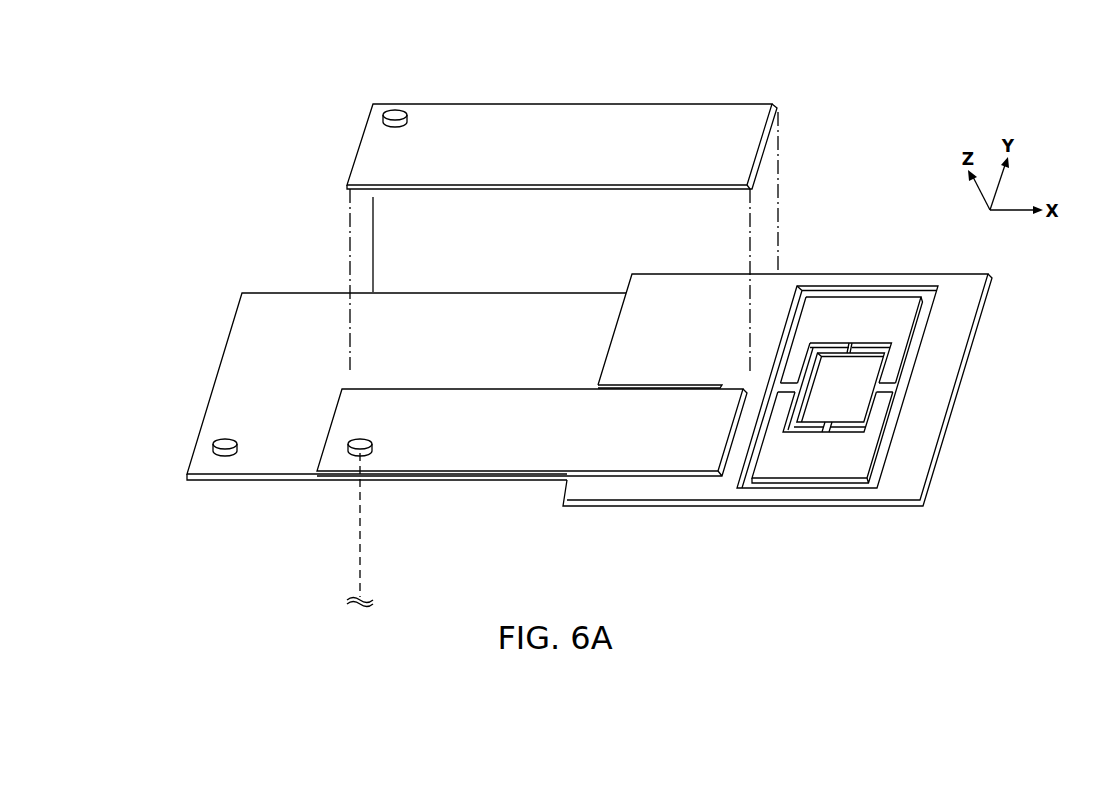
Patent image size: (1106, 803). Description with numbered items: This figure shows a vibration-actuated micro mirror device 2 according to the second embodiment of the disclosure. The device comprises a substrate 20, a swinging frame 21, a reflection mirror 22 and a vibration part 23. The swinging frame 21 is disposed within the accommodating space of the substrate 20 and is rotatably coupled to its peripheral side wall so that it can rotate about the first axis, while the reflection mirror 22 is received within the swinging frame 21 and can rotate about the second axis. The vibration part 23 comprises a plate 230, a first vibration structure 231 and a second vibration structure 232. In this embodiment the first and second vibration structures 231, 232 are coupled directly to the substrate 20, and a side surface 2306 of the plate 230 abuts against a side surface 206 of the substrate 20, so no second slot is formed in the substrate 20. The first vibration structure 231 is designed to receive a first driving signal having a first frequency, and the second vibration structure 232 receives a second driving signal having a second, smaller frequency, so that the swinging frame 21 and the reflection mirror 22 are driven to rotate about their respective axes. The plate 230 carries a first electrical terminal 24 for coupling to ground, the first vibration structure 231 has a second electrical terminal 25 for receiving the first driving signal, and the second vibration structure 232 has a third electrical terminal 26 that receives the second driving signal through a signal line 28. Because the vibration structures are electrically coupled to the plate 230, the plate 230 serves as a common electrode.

The vibration-actuated micro mirror device 2 is at (227, 124).
The substrate 20 is at (840, 278).
The swinging frame 21 is at (837, 387).
The reflection mirror 22 is at (842, 387).
The vibration part 23 is at (286, 282).
The first electrical terminal 24 is at (229, 442).
The second electrical terminal 25 is at (399, 110).
The third electrical terminal 26 is at (365, 442).
The signal line 28 is at (360, 533).
The side surface of the substrate 206 is at (618, 333).
The plate 230 is at (547, 302).
The first vibration structure 231 is at (657, 110).
The second vibration structure 232 is at (515, 463).
The side surface of the plate 2306 is at (597, 388).